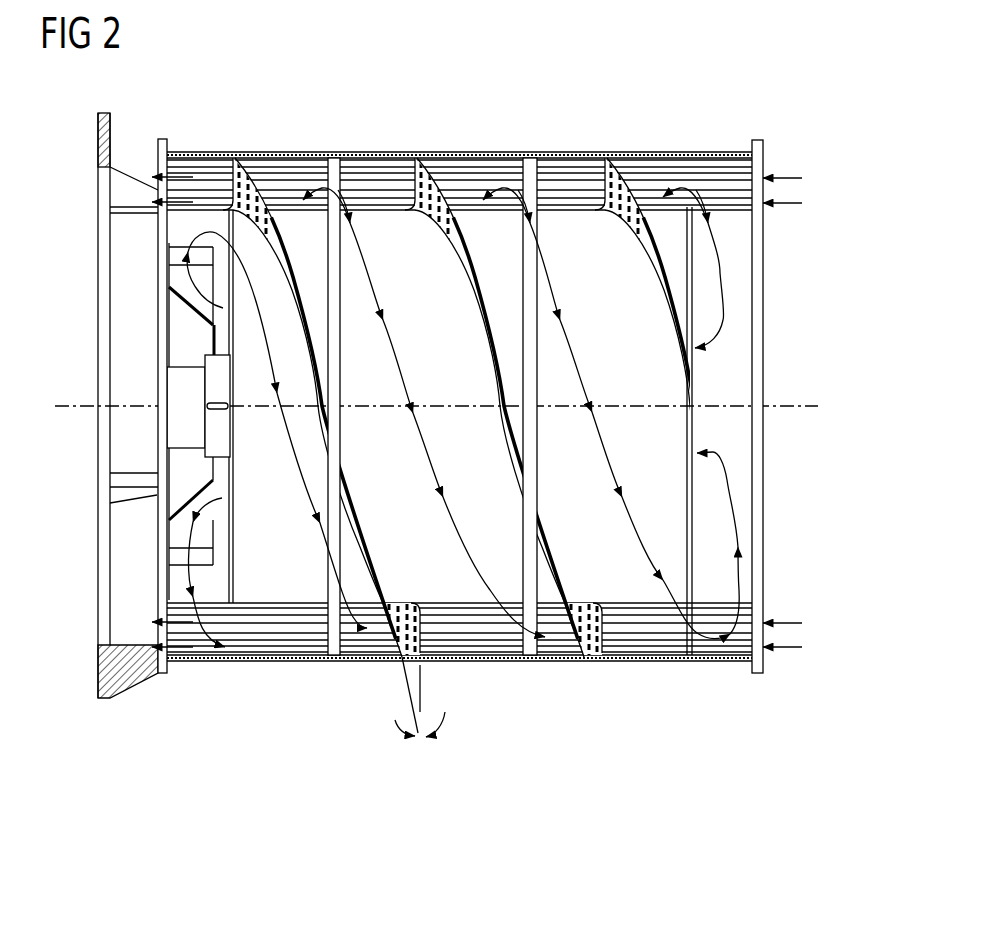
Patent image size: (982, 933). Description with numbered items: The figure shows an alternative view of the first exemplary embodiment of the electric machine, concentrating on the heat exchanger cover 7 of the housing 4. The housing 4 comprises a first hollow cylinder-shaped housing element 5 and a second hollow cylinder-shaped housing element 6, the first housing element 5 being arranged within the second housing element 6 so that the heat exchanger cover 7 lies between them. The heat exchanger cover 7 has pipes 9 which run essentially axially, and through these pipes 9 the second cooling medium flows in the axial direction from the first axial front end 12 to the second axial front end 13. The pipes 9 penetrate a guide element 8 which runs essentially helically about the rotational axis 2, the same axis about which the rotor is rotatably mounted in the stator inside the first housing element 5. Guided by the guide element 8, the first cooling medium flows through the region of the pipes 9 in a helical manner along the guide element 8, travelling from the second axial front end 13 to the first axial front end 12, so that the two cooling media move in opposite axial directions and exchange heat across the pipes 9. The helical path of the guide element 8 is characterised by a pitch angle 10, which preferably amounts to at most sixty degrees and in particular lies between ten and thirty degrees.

The rotational axis 2 is at (806, 408).
The housing 4 is at (97, 243).
The first hollow cylinder-shaped housing element 5 is at (473, 207).
The second hollow cylinder-shaped housing element 6 is at (502, 152).
The heat exchanger cover 7 is at (810, 152).
The guide element 8 is at (237, 157).
The pipes 9 is at (288, 183).
The pitch angle 10 is at (420, 740).
The first axial front end 12 is at (786, 327).
The second axial front end 13 is at (116, 325).